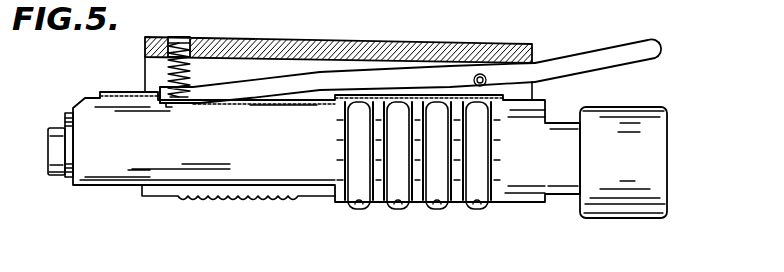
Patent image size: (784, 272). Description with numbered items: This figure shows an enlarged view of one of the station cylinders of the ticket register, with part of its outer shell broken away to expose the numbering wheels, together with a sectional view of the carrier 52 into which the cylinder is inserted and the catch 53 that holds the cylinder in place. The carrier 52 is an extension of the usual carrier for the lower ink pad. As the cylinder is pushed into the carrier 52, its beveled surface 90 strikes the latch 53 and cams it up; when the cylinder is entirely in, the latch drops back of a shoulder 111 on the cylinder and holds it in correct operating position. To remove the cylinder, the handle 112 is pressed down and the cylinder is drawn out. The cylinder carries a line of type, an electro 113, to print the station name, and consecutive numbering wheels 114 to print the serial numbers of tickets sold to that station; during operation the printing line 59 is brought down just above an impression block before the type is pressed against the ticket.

The beveled surface 90 is at (78, 105).
The carrier 52 is at (392, 44).
The catch 53 is at (229, 86).
The handle 112 is at (606, 52).
The shoulder 111 is at (163, 100).
The electro 113 is at (238, 203).
The printing line 59 is at (359, 209).
The consecutive numbering wheels 114 is at (373, 211).